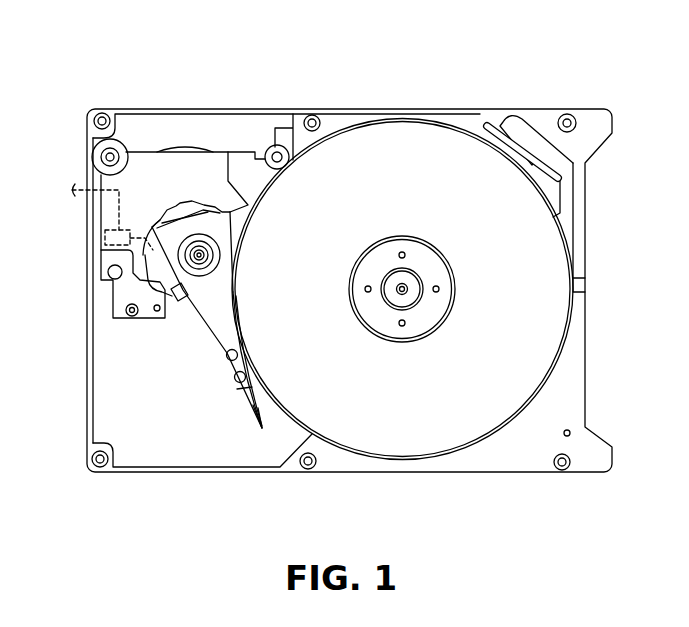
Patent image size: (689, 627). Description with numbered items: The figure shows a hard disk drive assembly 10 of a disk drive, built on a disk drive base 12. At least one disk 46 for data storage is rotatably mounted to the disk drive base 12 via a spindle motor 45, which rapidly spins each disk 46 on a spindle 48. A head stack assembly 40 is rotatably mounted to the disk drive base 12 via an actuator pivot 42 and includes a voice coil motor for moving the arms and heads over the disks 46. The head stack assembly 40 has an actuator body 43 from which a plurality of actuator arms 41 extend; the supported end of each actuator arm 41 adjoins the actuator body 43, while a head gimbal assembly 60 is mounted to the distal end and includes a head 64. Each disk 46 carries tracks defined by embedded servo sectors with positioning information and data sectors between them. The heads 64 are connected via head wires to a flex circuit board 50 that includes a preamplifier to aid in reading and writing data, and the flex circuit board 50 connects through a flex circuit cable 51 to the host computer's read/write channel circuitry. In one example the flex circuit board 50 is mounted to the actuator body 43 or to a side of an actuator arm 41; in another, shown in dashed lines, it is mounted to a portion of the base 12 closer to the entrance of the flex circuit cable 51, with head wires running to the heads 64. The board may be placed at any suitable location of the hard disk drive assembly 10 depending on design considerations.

The hard disk drive assembly 10 is at (160, 58).
The disk drive base 12 is at (509, 108).
The head stack assembly 40 is at (232, 293).
The actuator arms 41 is at (241, 335).
The actuator pivot 42 is at (236, 237).
The actuator body 43 is at (205, 225).
The spindle motor 45 is at (418, 238).
The disk 46 is at (437, 413).
The spindle 48 is at (413, 292).
The flex circuit board 50 is at (104, 238).
The flex circuit cable 51 is at (118, 200).
The head gimbal assembly 60 is at (258, 400).
The head 64 is at (262, 430).